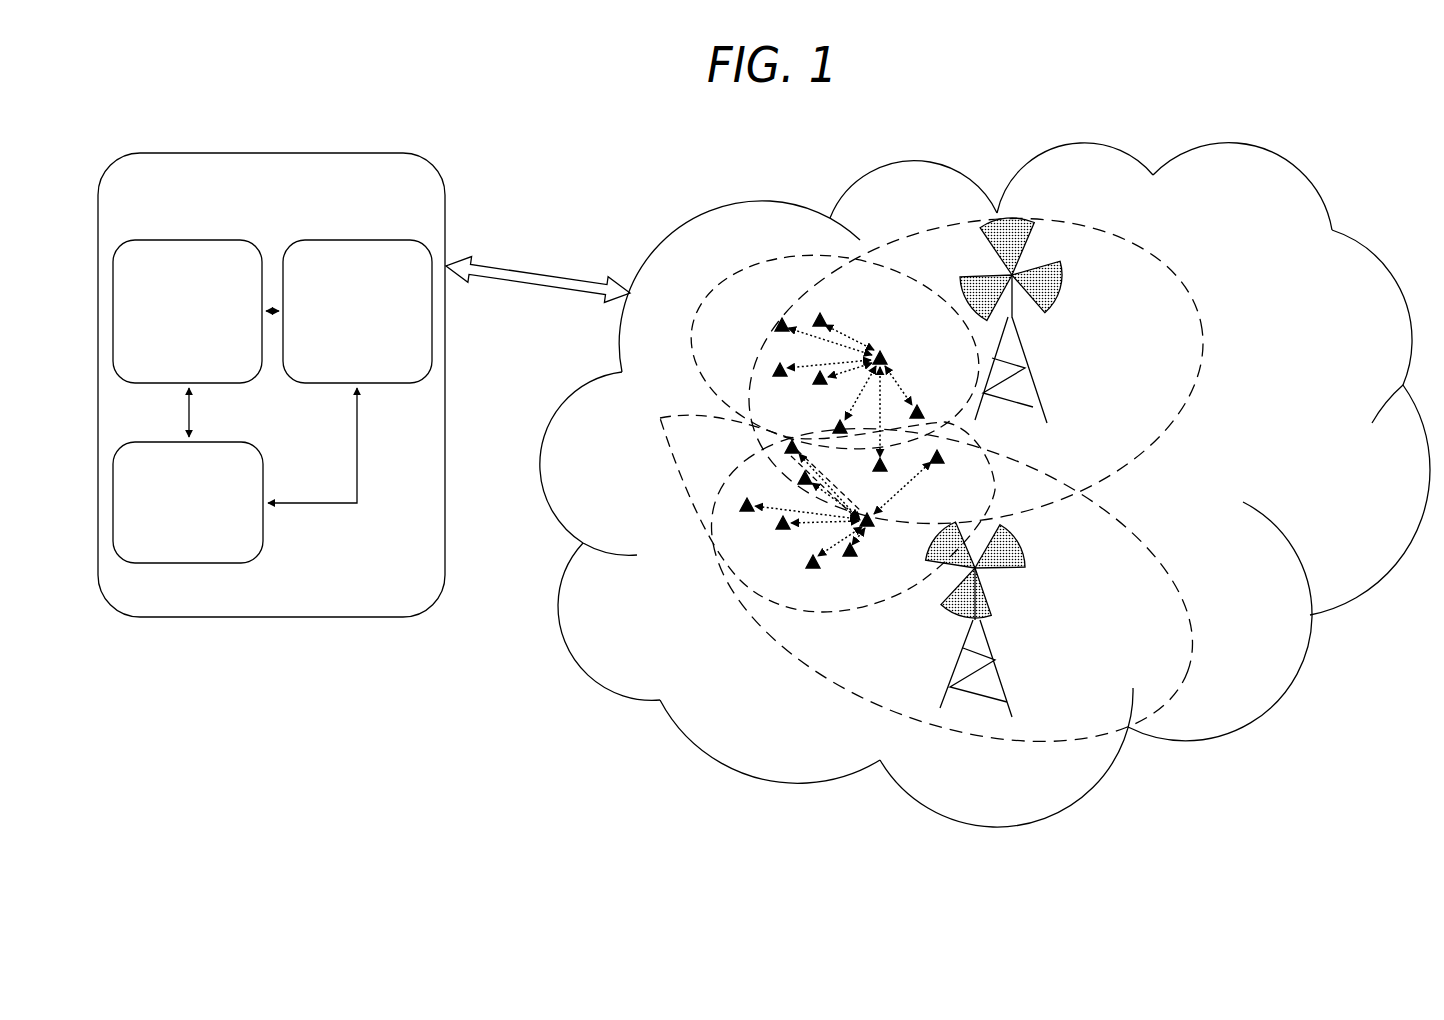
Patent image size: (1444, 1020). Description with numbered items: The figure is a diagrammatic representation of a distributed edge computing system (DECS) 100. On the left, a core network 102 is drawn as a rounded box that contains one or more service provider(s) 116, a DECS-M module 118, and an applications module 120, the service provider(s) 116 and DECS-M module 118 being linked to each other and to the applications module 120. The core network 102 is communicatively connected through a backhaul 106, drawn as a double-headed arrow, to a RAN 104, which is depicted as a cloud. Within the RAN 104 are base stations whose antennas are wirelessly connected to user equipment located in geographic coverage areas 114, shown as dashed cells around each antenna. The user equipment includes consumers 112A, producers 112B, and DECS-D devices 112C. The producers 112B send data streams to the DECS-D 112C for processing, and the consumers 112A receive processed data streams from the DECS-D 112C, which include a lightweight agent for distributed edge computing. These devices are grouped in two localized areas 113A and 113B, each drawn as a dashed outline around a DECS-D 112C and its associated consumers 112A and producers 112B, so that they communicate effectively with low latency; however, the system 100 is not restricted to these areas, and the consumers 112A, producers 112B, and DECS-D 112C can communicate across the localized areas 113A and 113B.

The distributed edge computing system 100 is at (1360, 180).
The core network 102 is at (256, 221).
The RAN 104 is at (703, 212).
The backhaul 106 is at (528, 274).
The consumers 112A is at (820, 312).
The producers 112B is at (778, 322).
The DECS-D 112C is at (883, 352).
The localized area 113A is at (725, 293).
The localized area 113B is at (687, 413).
The geographic coverage areas 114 is at (1187, 297).
The service provider(s) 116 is at (340, 350).
The DECS-M module 118 is at (170, 350).
The applications module 120 is at (172, 542).